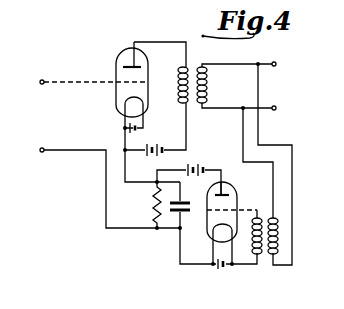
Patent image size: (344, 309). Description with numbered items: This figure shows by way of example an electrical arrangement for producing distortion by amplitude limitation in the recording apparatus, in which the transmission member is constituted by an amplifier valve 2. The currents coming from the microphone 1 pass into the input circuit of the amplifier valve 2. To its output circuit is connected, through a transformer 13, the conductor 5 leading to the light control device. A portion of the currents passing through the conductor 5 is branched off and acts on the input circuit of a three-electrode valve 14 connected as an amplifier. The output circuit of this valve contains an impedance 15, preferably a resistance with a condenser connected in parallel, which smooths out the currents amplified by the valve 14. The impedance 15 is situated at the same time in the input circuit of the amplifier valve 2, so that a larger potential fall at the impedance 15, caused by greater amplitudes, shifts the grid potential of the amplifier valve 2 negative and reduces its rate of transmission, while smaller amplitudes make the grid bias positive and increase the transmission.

The microphone 1 is at (98, 154).
The amplifier valve 2 is at (116, 66).
The conductor 5 is at (268, 86).
The transformer 13 is at (190, 90).
The three-electrode valve 14 is at (232, 199).
The impedance 15 is at (153, 201).